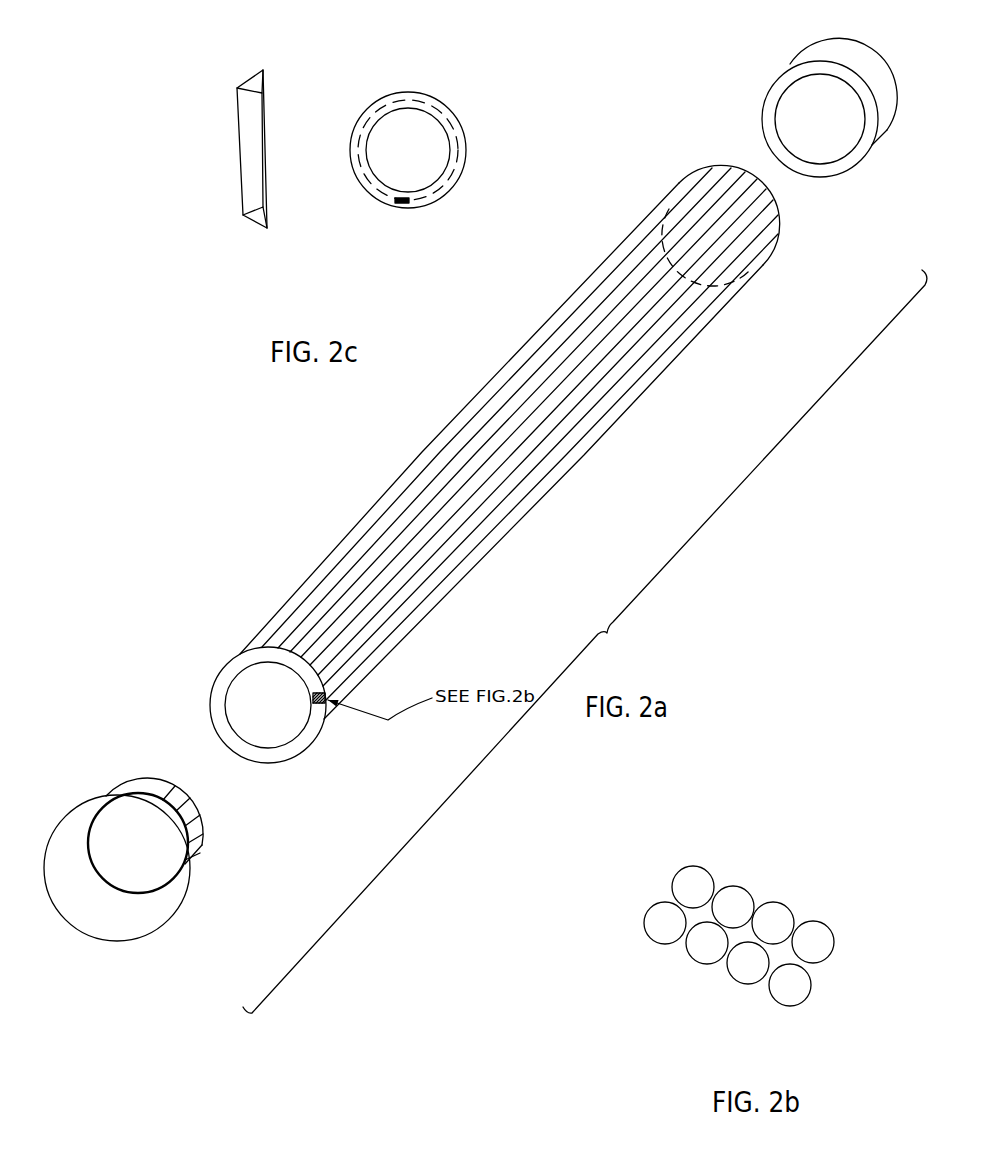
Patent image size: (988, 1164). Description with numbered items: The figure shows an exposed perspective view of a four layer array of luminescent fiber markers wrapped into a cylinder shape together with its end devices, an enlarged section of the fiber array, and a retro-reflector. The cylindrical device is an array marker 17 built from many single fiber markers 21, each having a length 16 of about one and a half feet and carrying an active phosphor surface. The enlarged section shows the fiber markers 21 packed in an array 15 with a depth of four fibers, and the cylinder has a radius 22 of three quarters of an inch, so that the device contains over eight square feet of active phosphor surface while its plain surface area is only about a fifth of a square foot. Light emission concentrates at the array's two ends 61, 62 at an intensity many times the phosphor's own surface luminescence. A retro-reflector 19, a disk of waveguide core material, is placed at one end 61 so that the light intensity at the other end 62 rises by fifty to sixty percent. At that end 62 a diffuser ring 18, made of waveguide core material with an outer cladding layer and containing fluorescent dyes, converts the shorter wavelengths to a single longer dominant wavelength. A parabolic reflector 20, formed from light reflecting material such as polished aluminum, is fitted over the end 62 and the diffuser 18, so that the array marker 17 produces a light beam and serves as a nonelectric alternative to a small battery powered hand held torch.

In FIG. 2b, the array 15 is at (860, 952).
In FIG. 2a, the length 16 is at (848, 248).
In FIG. 2a, the array marker 17 is at (463, 475).
In FIG. 2a, the diffuser ring 18 is at (777, 68).
In FIG. 2c, the retro-reflector 19 is at (348, 188).
In FIG. 2a, the parabolic reflector 20 is at (199, 852).
In FIG. 2b, the fiber marker 21 is at (815, 918).
In FIG. 2a, the radius 22 is at (233, 657).
In FIG. 2a, the end 61 is at (783, 246).
In FIG. 2a, the end 62 is at (318, 753).